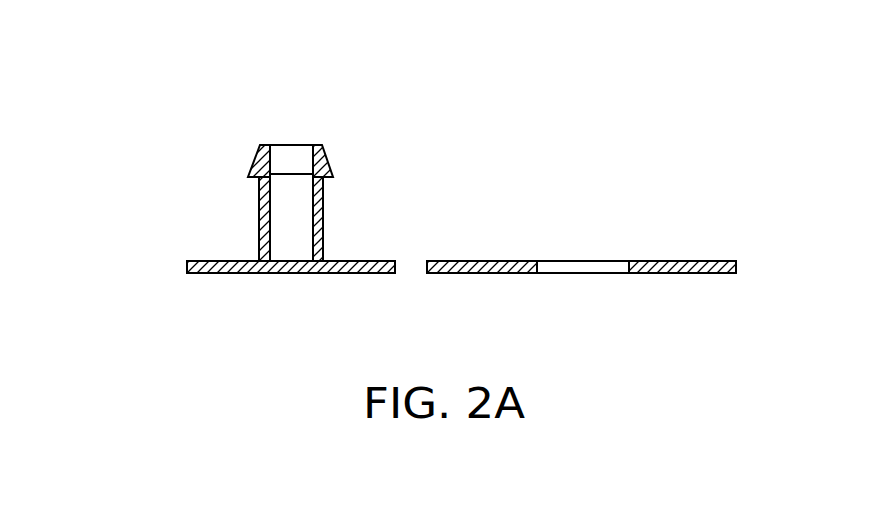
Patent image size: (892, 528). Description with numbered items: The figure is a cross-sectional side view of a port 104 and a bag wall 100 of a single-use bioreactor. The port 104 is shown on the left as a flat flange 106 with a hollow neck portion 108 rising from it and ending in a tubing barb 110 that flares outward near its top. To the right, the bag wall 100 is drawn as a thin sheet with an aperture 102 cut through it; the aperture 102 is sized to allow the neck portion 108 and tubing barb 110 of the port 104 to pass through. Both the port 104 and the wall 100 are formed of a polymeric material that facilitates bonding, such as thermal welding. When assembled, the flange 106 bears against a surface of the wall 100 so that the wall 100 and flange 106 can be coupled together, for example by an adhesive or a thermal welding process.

The bag wall 100 is at (581, 229).
The aperture 102 is at (580, 257).
The port 104 is at (242, 167).
The flange 106 is at (368, 262).
The neck portion 108 is at (258, 204).
The tubing barb 110 is at (257, 160).